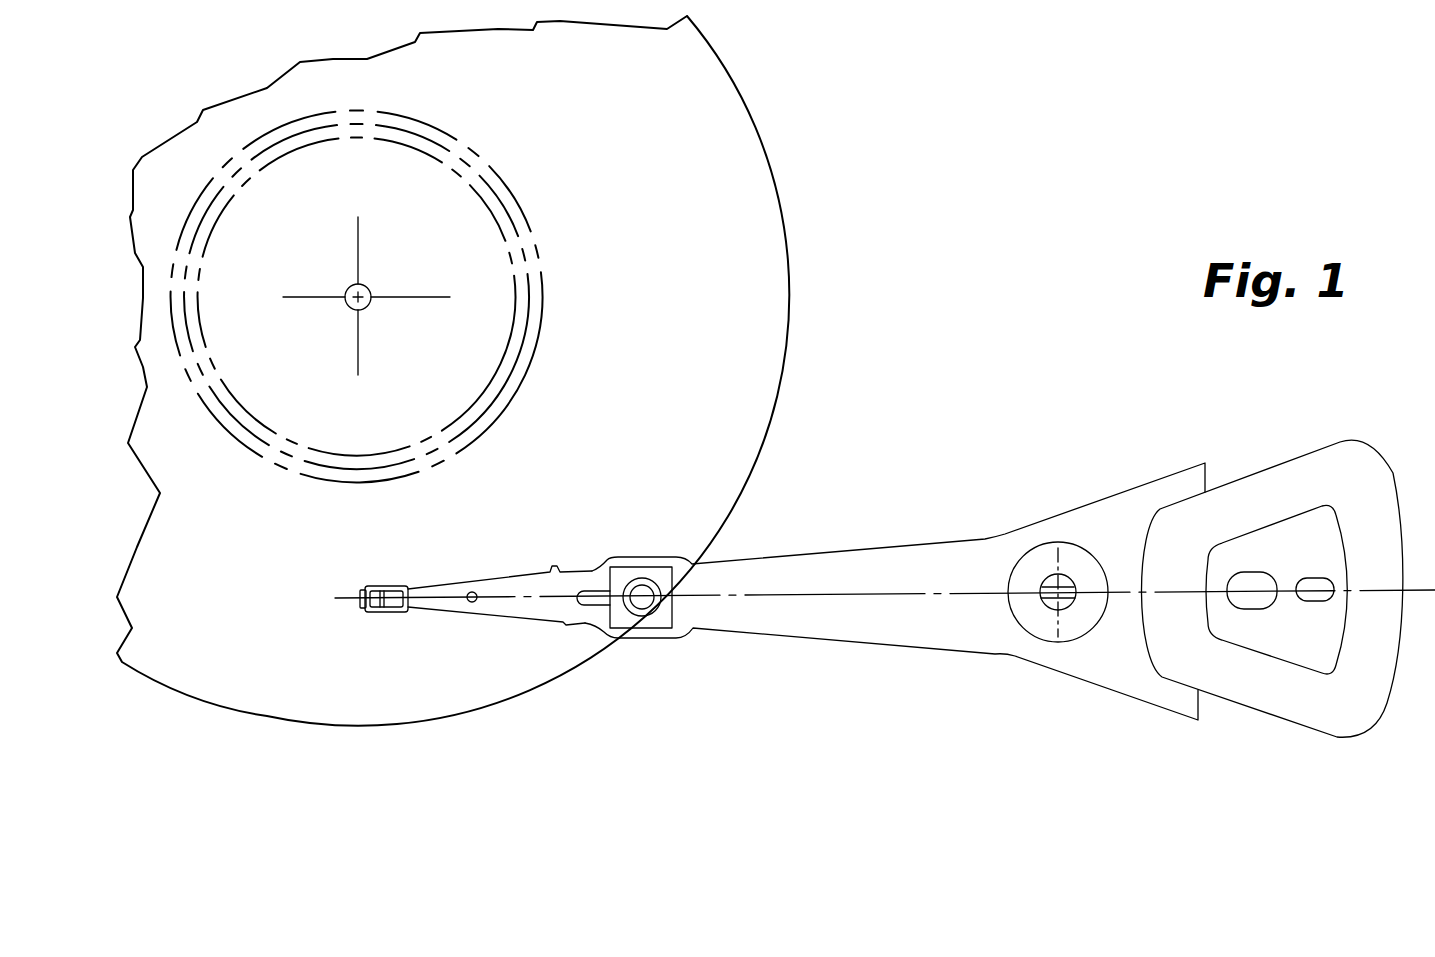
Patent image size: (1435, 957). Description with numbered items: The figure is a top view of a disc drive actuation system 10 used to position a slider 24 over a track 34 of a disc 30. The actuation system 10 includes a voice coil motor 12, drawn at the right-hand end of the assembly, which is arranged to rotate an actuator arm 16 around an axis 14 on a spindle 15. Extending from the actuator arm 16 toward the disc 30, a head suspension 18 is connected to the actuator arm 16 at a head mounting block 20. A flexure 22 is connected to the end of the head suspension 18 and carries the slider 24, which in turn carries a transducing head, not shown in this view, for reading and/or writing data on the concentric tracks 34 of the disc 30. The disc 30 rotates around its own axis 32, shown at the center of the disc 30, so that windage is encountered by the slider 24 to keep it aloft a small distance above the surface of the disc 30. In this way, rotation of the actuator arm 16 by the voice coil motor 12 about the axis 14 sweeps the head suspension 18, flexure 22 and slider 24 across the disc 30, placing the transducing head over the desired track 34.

The disc drive actuation system 10 is at (984, 423).
The voice coil motor 12 is at (1372, 448).
The axis 14 is at (1047, 605).
The spindle 15 is at (1068, 582).
The actuator arm 16 is at (805, 550).
The head suspension 18 is at (480, 573).
The head mounting block 20 is at (638, 566).
The flexure 22 is at (382, 588).
The slider 24 is at (360, 603).
The disc 30 is at (774, 408).
The axis 32 is at (367, 288).
The track 34 is at (319, 455).